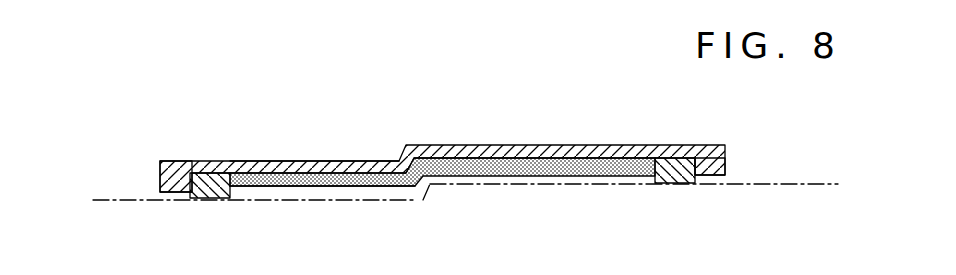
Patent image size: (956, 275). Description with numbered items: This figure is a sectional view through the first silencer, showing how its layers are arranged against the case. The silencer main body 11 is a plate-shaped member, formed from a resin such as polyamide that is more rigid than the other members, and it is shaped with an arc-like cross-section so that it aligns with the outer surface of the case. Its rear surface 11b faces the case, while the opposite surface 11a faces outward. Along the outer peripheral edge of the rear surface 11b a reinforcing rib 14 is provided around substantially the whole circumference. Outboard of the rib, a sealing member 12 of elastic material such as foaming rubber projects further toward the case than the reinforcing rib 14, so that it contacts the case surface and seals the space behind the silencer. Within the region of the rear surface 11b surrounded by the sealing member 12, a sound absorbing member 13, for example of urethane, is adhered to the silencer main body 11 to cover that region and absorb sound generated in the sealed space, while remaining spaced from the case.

The silencer main body 11 is at (468, 155).
The first surface of substrate 11a is at (353, 160).
The rear surface 11b is at (365, 187).
The sealing member 12 is at (207, 198).
The sound absorbing member 13 is at (518, 178).
The reinforcing rib 14 is at (178, 192).